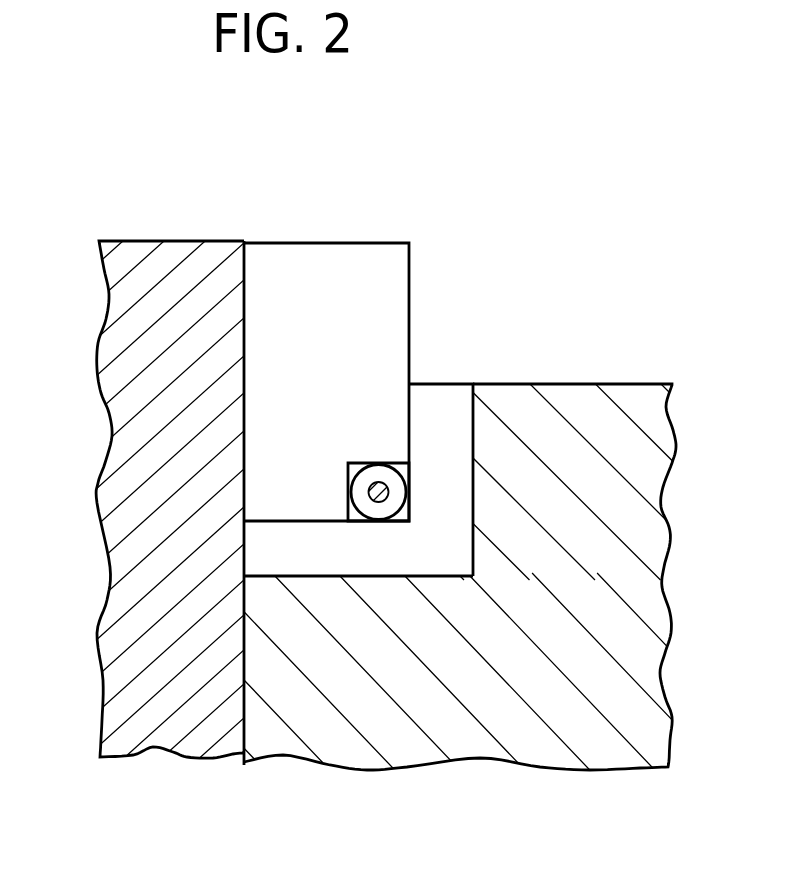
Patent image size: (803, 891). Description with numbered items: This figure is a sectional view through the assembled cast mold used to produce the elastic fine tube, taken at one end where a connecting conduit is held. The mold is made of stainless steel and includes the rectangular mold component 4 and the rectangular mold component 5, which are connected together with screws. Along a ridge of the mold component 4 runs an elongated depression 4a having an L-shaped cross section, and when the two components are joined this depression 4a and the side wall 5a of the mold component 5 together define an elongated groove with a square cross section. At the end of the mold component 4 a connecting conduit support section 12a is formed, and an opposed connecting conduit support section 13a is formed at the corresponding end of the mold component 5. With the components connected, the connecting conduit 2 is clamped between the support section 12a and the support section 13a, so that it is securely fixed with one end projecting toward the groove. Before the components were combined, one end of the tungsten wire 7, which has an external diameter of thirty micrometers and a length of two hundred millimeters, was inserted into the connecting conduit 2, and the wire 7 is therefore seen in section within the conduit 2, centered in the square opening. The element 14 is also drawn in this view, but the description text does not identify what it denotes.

The seal member 2 is at (410, 522).
The housing body 4 is at (607, 690).
The housing body end face 4a is at (363, 576).
The cover member 5 is at (153, 277).
The cover member side face 5a is at (245, 302).
The O-ring core 7 is at (393, 493).
The gap 12a is at (438, 414).
The recess 13a is at (333, 312).
The O-ring 14 is at (365, 462).